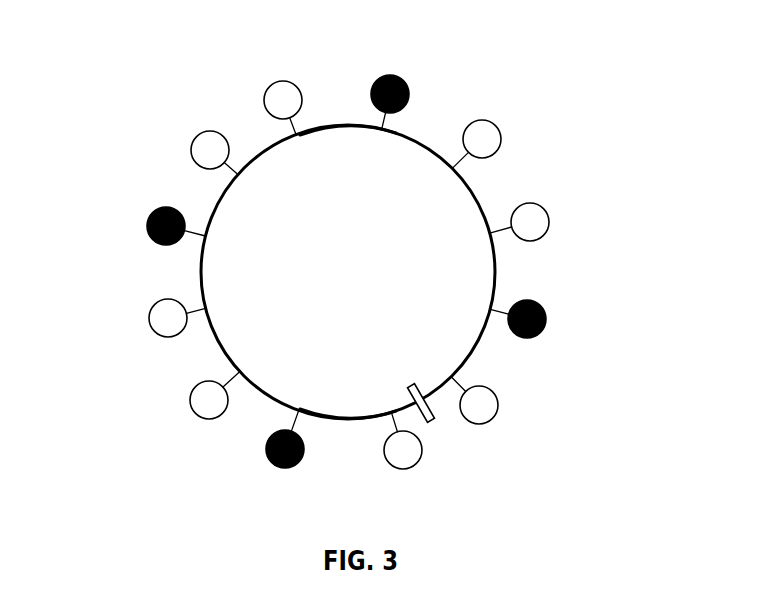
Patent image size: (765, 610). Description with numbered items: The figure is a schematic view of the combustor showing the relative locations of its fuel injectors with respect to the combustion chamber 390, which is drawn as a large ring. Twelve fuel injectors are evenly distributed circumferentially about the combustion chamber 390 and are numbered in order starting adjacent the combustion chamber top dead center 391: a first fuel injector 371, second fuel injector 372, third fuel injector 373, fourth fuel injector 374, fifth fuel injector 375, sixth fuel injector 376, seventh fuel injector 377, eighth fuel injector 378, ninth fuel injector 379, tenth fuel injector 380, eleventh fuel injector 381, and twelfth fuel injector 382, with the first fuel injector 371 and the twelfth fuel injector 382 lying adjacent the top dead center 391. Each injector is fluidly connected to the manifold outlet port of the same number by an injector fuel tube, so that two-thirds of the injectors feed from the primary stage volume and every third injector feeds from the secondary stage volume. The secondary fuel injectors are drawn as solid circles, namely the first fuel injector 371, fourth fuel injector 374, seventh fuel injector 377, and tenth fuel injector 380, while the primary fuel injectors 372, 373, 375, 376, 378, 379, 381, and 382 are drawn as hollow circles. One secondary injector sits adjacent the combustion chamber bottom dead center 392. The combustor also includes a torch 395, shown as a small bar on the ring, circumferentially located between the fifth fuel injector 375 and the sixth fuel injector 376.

The first fuel injector 371 is at (395, 88).
The second fuel injector 372 is at (485, 137).
The third fuel injector 373 is at (533, 220).
The fourth fuel injector 374 is at (535, 325).
The fifth fuel injector 375 is at (487, 411).
The sixth fuel injector 376 is at (400, 458).
The seventh fuel injector 377 is at (278, 460).
The eighth fuel injector 378 is at (202, 399).
The ninth fuel injector 379 is at (160, 322).
The tenth fuel injector 380 is at (152, 228).
The eleventh fuel injector 381 is at (206, 147).
The twelfth fuel injector 382 is at (277, 95).
The combustion chamber 390 is at (248, 208).
The combustion chamber top dead center 391 is at (332, 125).
The combustion chamber bottom dead center 392 is at (362, 423).
The torch 395 is at (432, 427).